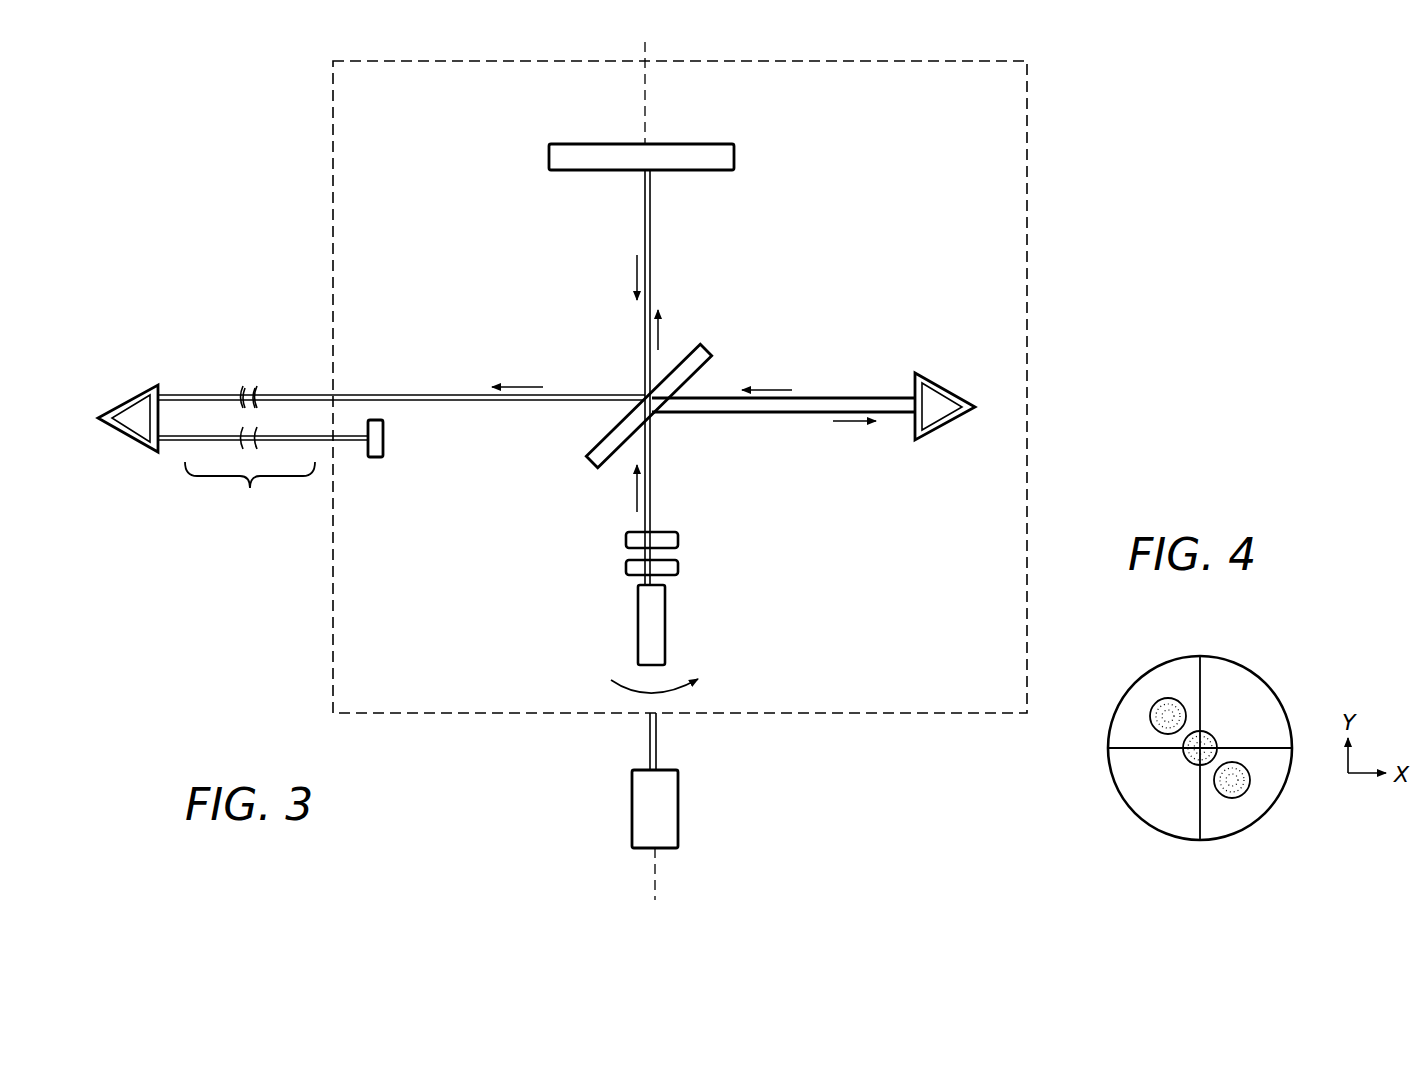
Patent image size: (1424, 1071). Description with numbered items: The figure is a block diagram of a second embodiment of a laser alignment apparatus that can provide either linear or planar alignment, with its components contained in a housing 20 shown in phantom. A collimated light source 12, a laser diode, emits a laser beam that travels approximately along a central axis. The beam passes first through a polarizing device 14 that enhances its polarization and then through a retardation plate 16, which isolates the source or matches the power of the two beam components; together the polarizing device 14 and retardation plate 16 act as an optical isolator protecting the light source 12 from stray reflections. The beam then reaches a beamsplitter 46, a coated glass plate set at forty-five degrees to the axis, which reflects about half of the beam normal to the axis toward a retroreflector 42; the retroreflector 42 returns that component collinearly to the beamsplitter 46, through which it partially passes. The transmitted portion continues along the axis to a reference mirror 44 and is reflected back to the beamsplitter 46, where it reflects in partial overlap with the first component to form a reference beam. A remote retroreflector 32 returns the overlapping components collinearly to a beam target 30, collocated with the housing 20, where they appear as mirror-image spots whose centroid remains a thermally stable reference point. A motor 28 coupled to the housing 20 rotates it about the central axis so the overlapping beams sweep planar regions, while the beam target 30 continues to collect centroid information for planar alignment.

In FIG. 3, the collimated light source 12 is at (645, 636).
In FIG. 3, the polarizing device 14 is at (630, 568).
In FIG. 3, the retardation plate 16 is at (665, 540).
In FIG. 3, the housing 20 is at (1032, 242).
In FIG. 3, the motor 28 is at (632, 807).
In FIG. 3, the beam target 30 is at (383, 450).
In FIG. 4, the beam target 30 is at (1252, 670).
In FIG. 3, the retroreflector 32 is at (142, 385).
In FIG. 3, the retroreflector 42 is at (945, 425).
In FIG. 3, the reference mirror 44 is at (683, 155).
In FIG. 3, the beamsplitter 46 is at (598, 452).